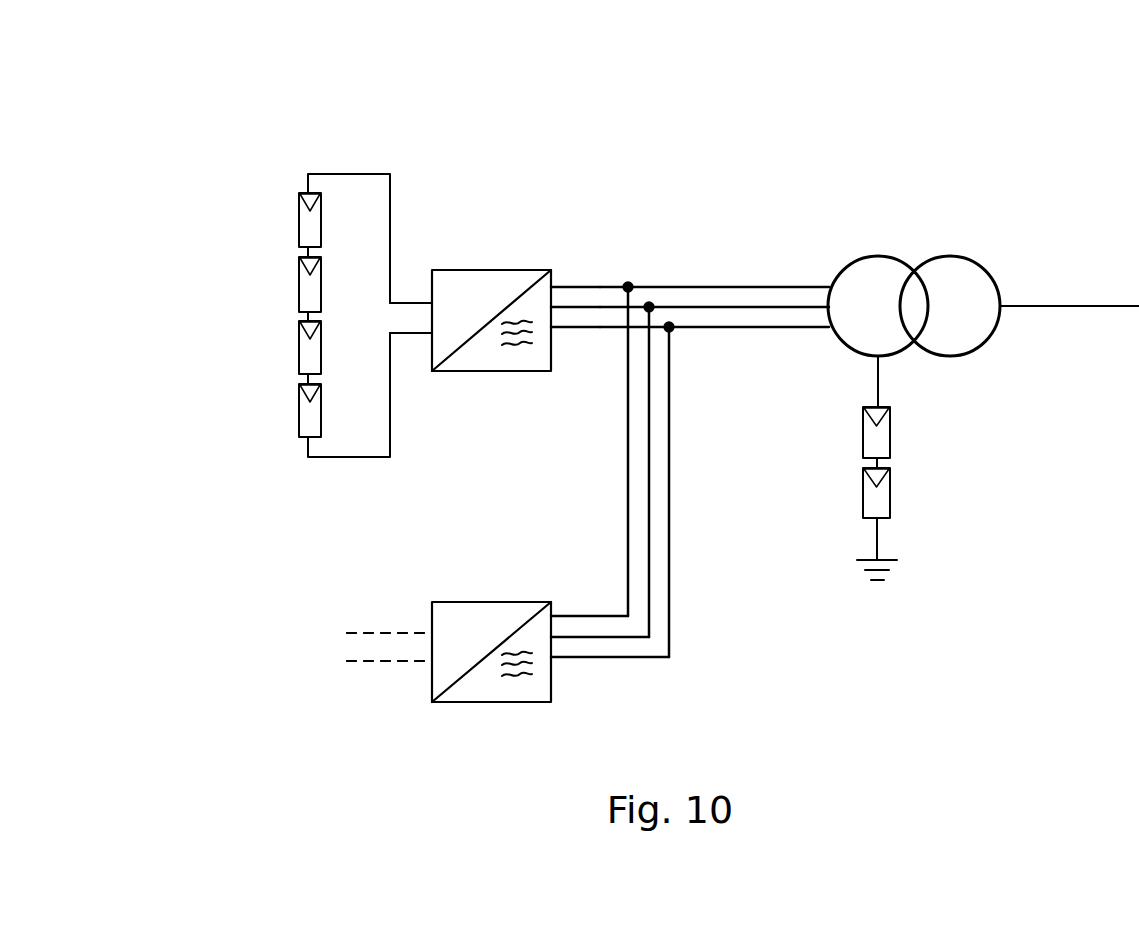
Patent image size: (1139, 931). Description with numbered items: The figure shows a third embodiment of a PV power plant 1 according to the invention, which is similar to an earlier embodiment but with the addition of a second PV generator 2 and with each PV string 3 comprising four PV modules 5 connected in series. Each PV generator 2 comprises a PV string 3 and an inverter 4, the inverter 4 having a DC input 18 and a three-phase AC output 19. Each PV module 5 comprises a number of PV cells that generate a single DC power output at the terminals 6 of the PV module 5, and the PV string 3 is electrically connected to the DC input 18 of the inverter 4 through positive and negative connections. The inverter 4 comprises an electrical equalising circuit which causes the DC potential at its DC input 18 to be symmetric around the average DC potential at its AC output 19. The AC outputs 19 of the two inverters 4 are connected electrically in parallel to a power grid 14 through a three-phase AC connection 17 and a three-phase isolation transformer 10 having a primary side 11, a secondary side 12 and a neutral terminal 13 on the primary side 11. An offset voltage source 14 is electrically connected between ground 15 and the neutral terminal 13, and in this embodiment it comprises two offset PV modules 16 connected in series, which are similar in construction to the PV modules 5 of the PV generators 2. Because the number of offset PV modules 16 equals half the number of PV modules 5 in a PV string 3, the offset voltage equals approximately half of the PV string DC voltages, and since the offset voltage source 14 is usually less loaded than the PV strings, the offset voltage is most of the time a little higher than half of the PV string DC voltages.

The photovoltaic system 1 is at (227, 647).
The PV generator 2 is at (508, 431).
The PV string 3 is at (347, 260).
The inverter 4 is at (517, 270).
The PV module 5 is at (299, 218).
The terminals 6 is at (312, 186).
The three-phase isolation transformer 10 is at (983, 343).
The primary side 11 is at (880, 256).
The secondary side 12 is at (948, 256).
The neutral terminal 13 is at (878, 378).
The offset voltage source 14 is at (1038, 517).
The ground 15 is at (878, 553).
The offset PV module 16 is at (890, 433).
The three-phase AC connection 17 is at (720, 287).
The DC input 18 is at (423, 293).
The three-phase AC output 19 is at (560, 333).